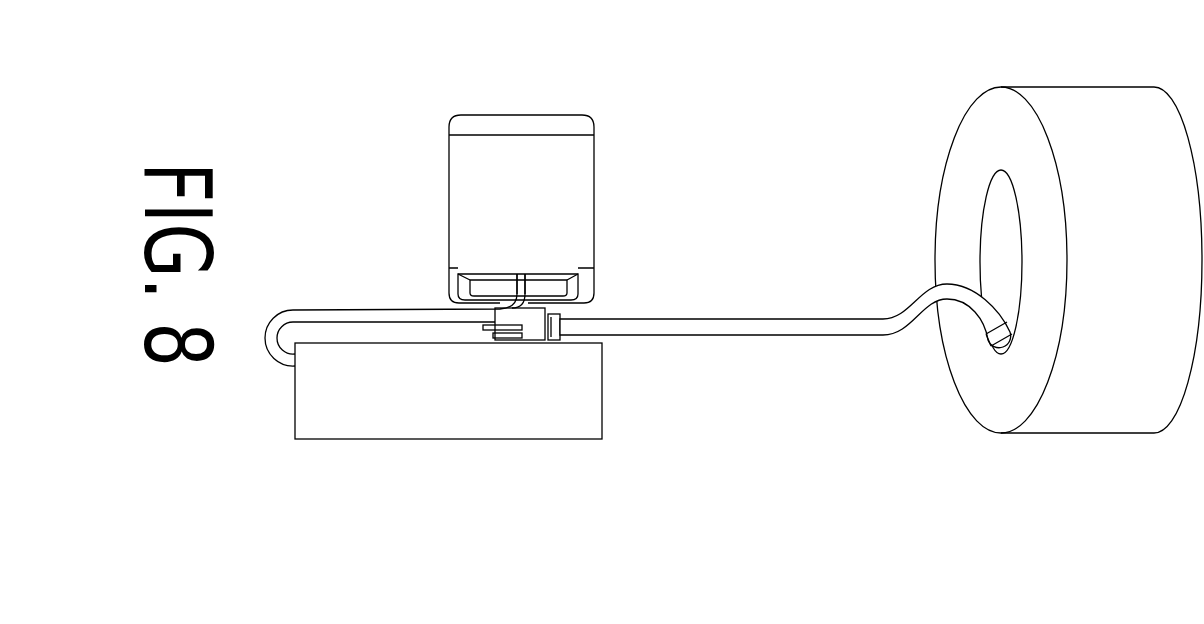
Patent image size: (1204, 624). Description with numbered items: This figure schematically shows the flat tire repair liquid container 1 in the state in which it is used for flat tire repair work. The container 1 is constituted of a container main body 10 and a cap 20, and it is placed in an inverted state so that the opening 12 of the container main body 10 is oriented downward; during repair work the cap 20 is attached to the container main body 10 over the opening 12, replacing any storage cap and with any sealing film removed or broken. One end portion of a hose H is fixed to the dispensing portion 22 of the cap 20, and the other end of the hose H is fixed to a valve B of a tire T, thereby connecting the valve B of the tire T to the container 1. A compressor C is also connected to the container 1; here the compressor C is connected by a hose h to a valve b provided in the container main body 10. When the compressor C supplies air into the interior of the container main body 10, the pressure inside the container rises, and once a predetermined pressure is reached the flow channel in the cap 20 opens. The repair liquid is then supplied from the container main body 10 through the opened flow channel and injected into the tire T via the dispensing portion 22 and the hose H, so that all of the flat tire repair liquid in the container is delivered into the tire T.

The flat tire repair liquid container 1 is at (551, 225).
The container main body 10 is at (596, 182).
The opening 12 is at (540, 292).
The cap 20 is at (547, 313).
The dispensing portion 22 is at (547, 341).
The valve b is at (520, 273).
The hose h is at (315, 310).
The hose H is at (772, 322).
The tire T is at (1085, 90).
The valve B is at (998, 344).
The compressor C is at (444, 433).